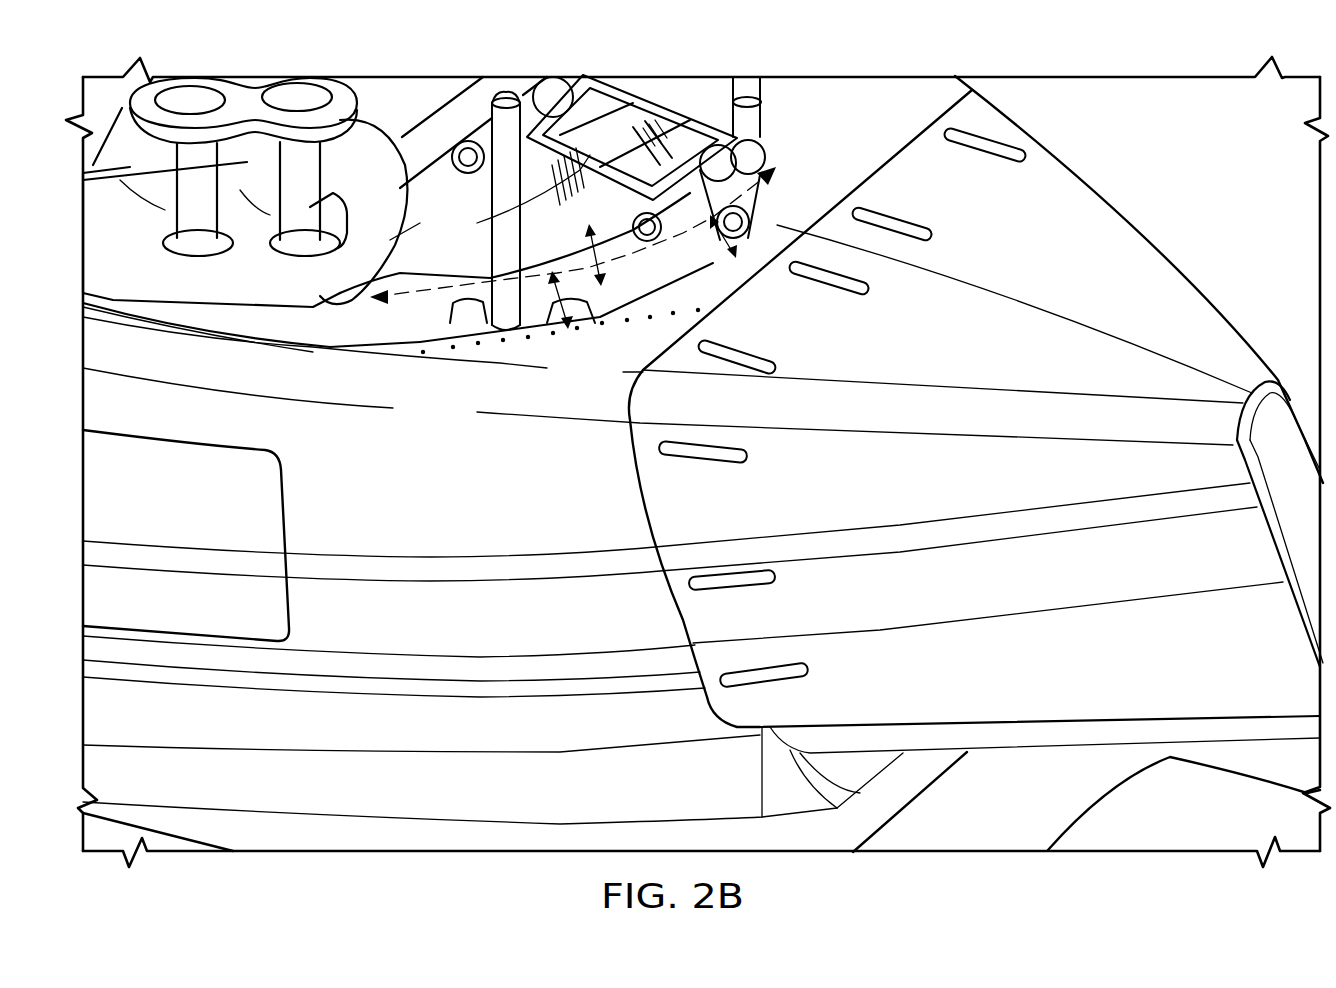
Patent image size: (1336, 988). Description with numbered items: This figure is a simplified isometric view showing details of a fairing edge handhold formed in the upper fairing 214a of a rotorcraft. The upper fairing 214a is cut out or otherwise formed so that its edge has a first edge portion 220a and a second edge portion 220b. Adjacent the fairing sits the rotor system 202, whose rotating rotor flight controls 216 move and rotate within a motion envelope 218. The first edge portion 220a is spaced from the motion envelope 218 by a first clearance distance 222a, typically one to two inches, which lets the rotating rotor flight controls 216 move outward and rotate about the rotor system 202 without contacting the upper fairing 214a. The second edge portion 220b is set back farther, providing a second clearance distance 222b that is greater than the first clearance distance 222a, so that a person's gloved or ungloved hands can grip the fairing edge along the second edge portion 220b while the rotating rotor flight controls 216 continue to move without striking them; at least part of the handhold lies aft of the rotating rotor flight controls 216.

The rotor system 202 is at (426, 99).
The rotating rotor flight controls 216 is at (680, 113).
The motion envelope 218 is at (470, 287).
The first edge portion 220a is at (797, 205).
The second edge portion 220b is at (427, 352).
The first clearance distance 222a is at (740, 270).
The second clearance distance 222b is at (643, 372).
The upper fairing 214a is at (462, 794).